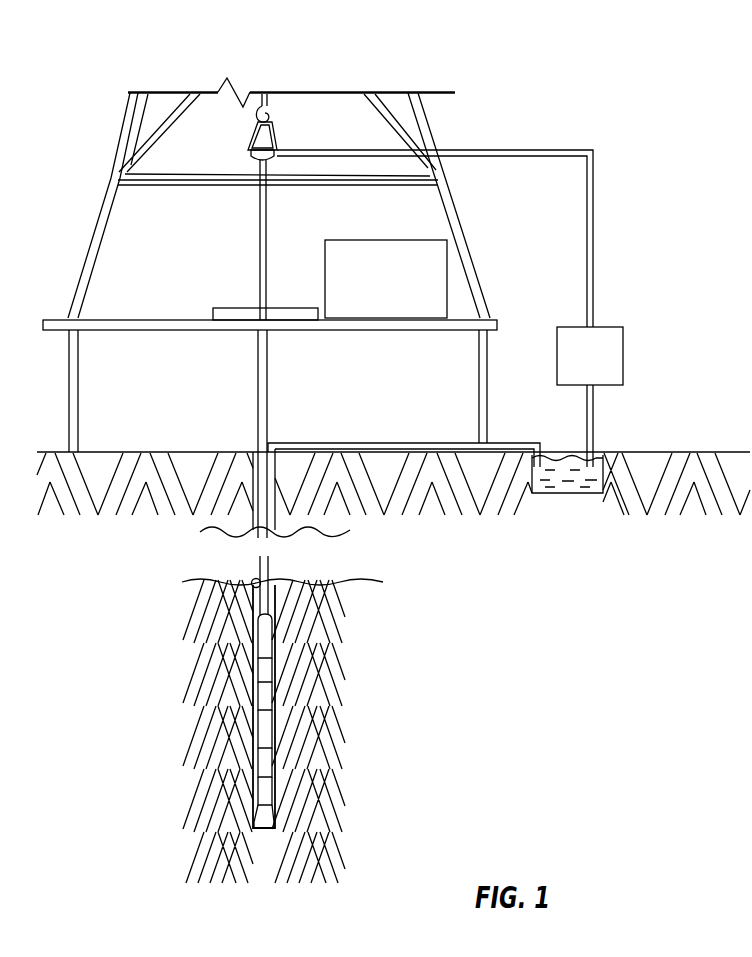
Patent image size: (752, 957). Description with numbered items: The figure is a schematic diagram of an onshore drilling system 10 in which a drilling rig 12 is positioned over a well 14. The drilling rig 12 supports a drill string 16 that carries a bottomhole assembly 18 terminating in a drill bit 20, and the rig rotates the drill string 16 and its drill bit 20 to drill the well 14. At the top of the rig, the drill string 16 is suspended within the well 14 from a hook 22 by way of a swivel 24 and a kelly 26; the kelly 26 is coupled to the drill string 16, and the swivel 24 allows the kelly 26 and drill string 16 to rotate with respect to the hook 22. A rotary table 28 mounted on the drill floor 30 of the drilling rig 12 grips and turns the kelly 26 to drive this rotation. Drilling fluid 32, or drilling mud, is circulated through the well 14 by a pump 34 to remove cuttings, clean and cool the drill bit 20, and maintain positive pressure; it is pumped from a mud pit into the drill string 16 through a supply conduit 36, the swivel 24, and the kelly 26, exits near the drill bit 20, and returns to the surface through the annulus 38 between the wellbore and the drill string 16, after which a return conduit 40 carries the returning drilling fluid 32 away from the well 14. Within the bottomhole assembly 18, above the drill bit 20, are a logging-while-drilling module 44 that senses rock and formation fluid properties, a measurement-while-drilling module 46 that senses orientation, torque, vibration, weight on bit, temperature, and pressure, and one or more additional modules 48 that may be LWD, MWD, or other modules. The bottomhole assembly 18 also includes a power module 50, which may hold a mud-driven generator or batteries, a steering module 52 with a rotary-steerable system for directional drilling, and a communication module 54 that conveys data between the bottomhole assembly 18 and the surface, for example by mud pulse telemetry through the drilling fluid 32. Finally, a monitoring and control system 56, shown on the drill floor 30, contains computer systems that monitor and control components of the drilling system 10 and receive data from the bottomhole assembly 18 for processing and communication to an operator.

The drilling system 10 is at (100, 22).
The drilling rig 12 is at (98, 251).
The well 14 is at (256, 447).
The drill string 16 is at (268, 388).
The bottomhole assembly 18 is at (150, 615).
The drill bit 20 is at (266, 818).
The hook 22 is at (270, 118).
The swivel 24 is at (250, 158).
The kelly 26 is at (260, 217).
The rotary table 28 is at (238, 308).
The drill floor 30 is at (56, 320).
The drilling fluid 32 is at (563, 474).
The pump 34 is at (626, 357).
The supply conduit 36 is at (514, 150).
The annulus 38 is at (254, 578).
The return conduit 40 is at (378, 442).
The logging-while-drilling module 44 is at (266, 733).
The measurement-while-drilling module 46 is at (266, 770).
The additional module 48 is at (266, 715).
The power module 50 is at (266, 683).
The steering module 52 is at (266, 790).
The communication module 54 is at (266, 634).
The monitoring and control system 56 is at (387, 239).